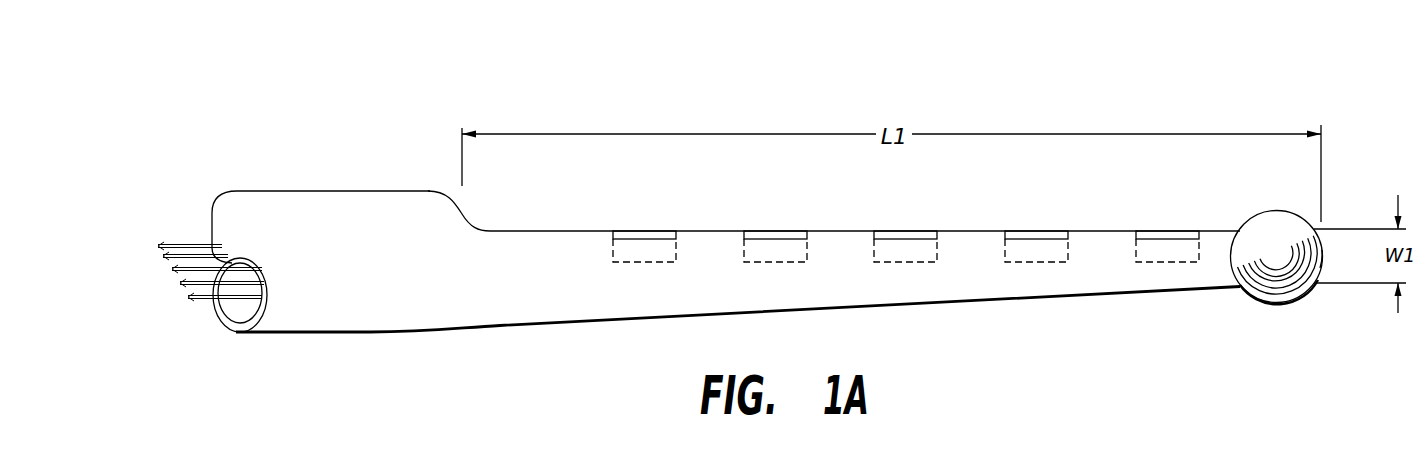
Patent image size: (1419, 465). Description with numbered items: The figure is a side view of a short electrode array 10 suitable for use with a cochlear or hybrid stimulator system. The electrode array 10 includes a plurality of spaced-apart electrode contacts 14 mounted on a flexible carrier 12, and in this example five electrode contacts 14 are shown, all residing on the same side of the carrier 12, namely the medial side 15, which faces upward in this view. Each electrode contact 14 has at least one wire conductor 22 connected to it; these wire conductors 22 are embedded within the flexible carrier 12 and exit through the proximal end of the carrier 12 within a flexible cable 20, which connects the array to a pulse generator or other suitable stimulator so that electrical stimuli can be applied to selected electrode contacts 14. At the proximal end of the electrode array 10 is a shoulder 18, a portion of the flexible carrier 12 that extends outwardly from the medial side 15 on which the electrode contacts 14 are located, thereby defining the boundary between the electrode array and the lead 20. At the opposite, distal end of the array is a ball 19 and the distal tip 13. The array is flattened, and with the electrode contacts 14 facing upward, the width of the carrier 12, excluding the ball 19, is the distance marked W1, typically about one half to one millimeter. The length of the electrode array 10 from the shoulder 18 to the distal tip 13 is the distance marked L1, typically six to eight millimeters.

The electrode array 10 is at (352, 98).
The flexible carrier 12 is at (370, 306).
The distal tip 13 is at (1340, 255).
The electrode contacts 14 is at (644, 233).
The medial side 15 is at (562, 218).
The shoulder 18 is at (462, 207).
The ball 19 is at (1292, 256).
The flexible cable 20 is at (268, 191).
The wire conductors 22 is at (173, 246).